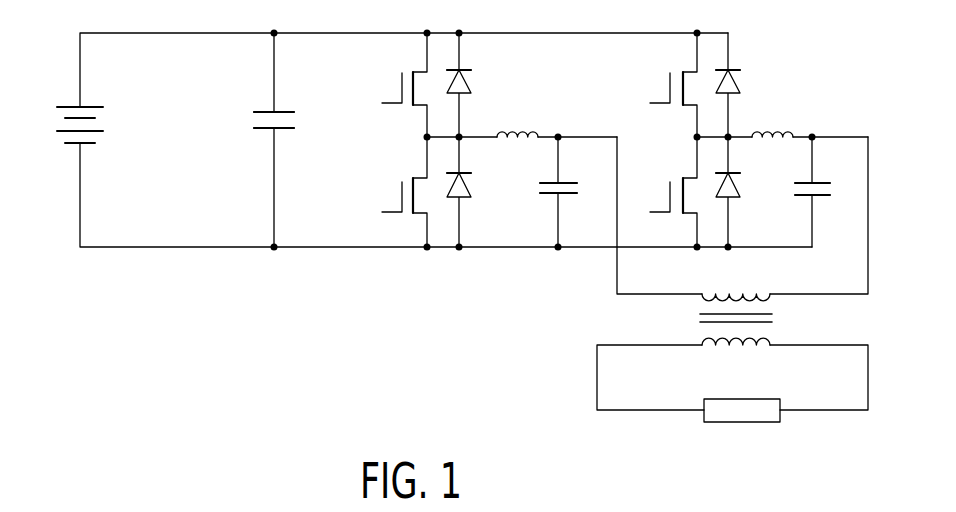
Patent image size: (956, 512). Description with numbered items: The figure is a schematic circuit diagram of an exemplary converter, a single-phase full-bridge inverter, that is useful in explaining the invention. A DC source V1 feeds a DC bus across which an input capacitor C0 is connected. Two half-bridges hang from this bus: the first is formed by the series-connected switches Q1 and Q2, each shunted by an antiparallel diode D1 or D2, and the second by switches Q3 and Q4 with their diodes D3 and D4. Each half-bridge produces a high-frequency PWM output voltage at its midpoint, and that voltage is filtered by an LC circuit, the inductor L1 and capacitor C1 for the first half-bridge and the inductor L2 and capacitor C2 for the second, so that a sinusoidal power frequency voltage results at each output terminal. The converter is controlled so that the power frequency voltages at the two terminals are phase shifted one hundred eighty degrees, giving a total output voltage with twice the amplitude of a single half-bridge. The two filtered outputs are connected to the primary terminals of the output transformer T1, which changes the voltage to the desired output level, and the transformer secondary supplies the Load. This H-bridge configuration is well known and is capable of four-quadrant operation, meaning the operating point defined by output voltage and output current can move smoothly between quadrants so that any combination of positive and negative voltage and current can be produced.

The DC input voltage source V1 is at (64, 112).
The input filter capacitor C0 is at (253, 140).
The first switching transistor Q1 is at (389, 85).
The second switching transistor Q2 is at (389, 192).
The first diode D1 is at (482, 85).
The second diode D2 is at (482, 192).
The first inductor L1 is at (526, 109).
The first capacitor C1 is at (575, 192).
The third switching transistor Q3 is at (659, 85).
The fourth switching transistor Q4 is at (659, 192).
The third diode D3 is at (749, 85).
The fourth diode D4 is at (749, 192).
The second inductor L2 is at (788, 109).
The second capacitor C2 is at (828, 192).
The transformer T1 is at (755, 319).
The load Load is at (742, 431).